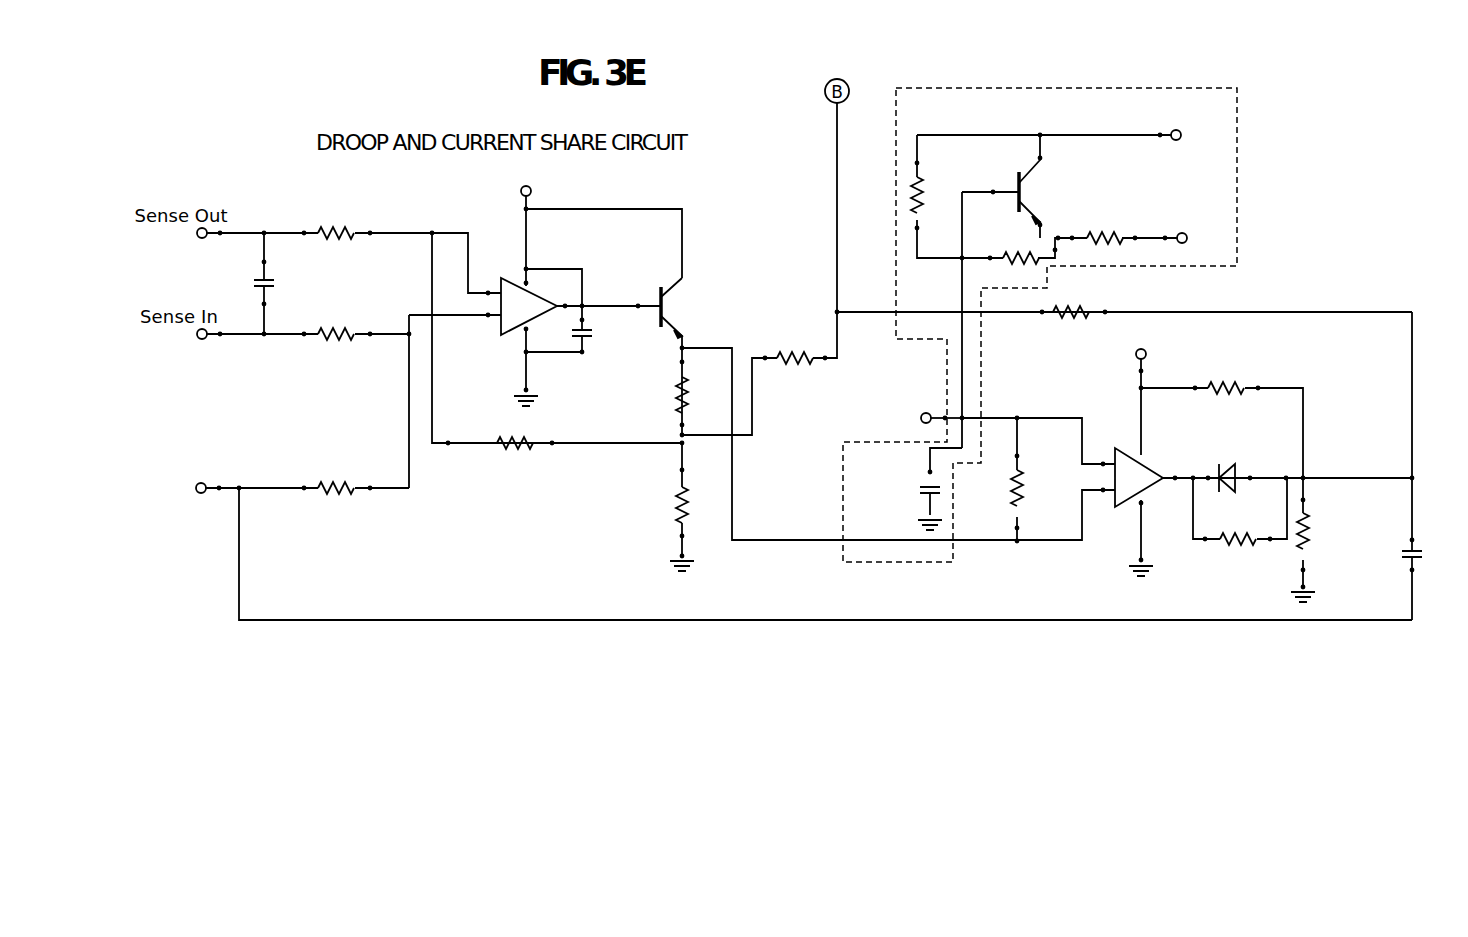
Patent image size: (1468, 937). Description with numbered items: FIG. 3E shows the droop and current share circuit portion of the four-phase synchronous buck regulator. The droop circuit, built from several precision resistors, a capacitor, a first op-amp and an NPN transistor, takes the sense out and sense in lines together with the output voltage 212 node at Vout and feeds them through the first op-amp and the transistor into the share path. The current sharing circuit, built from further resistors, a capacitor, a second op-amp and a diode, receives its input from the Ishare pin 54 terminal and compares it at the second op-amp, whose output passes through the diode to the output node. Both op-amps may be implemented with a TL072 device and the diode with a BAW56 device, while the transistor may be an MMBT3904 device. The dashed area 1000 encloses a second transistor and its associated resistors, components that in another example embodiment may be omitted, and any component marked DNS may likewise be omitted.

The output voltage 212 is at (789, 495).
The area 1000 is at (1052, 297).
The Ishare pin 54 is at (912, 417).